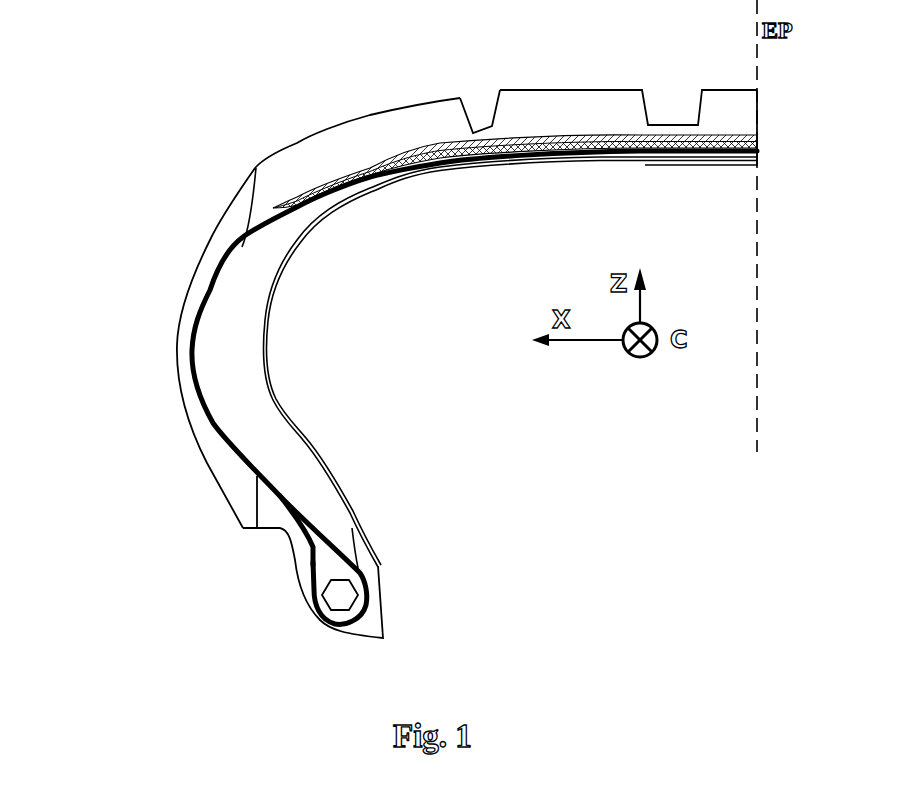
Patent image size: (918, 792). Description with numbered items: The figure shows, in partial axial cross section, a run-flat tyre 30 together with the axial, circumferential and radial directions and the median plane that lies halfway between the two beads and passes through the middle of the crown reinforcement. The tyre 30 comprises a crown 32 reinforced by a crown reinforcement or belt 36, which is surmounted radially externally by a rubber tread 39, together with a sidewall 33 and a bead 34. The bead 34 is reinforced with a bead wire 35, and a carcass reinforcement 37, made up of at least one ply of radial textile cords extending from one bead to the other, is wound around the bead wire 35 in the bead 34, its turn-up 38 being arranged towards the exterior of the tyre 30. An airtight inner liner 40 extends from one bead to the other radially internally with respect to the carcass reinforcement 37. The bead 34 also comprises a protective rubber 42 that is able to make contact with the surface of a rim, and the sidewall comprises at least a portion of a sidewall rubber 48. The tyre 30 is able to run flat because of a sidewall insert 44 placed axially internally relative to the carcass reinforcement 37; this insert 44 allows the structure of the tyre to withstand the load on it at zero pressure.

The run-flat tyre 30 is at (264, 138).
The crown 32 is at (473, 101).
The sidewall 33 is at (166, 359).
The bead 34 is at (278, 558).
The bead wire 35 is at (342, 592).
The crown reinforcement 36 is at (577, 147).
The carcass reinforcement 37 is at (225, 252).
The turn-up 38 is at (310, 545).
The rubber tread 39 is at (553, 115).
The airtight inner liner 40 is at (290, 417).
The protective rubber 42 is at (373, 612).
The sidewall insert 44 is at (237, 342).
The sidewall rubber 48 is at (183, 337).